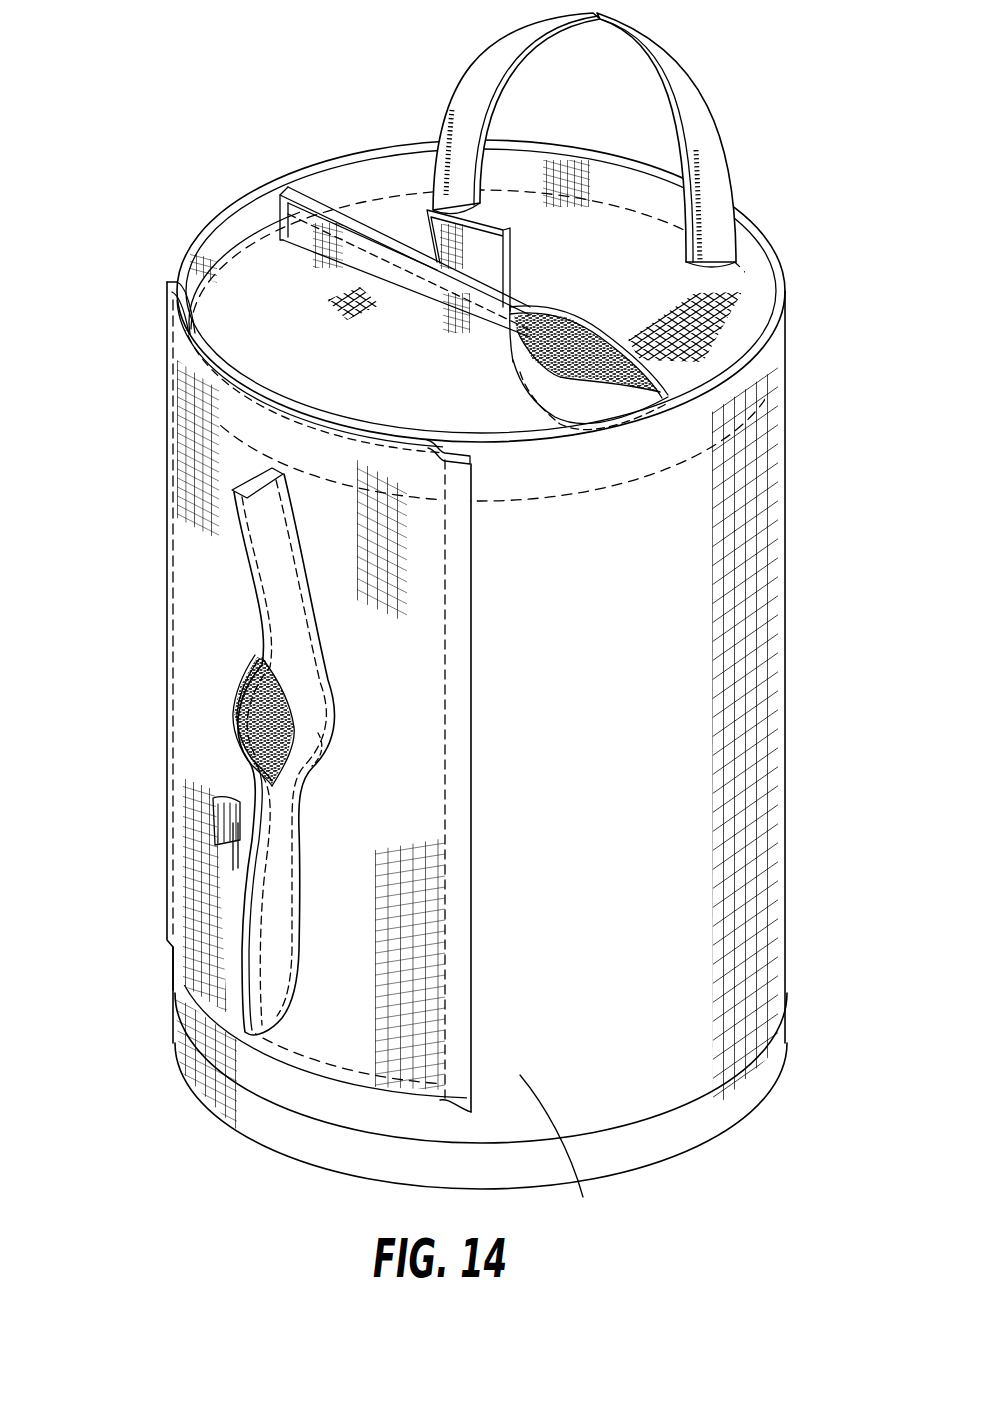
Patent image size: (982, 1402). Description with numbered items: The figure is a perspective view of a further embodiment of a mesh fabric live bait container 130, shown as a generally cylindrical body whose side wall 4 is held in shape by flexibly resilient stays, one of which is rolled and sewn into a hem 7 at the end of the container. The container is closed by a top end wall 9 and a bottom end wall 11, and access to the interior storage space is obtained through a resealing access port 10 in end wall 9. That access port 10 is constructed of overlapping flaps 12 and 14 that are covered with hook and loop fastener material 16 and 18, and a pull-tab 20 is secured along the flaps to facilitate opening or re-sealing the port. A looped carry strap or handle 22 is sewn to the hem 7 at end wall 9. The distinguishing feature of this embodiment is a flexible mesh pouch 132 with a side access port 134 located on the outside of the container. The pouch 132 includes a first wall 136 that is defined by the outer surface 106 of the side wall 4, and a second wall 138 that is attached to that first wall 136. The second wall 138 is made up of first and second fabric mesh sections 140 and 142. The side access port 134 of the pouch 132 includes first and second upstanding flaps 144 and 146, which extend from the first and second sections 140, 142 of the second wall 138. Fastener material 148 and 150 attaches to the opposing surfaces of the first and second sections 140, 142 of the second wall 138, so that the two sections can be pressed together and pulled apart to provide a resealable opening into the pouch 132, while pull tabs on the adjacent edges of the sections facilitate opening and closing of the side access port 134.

The side wall 4 is at (792, 664).
The hem 7 is at (754, 398).
The end wall 9 is at (728, 335).
The access port 10 is at (607, 335).
The end wall 11 is at (278, 1148).
The flap 12 is at (492, 332).
The flap 14 is at (605, 322).
The hook and loop fastener material 16 is at (563, 362).
The hook and loop fastener material 18 is at (578, 356).
The pull-tab 20 is at (480, 271).
The handle 22 is at (697, 125).
The outer surface 106 is at (627, 1148).
The live bait container 130 is at (203, 190).
The flexible mesh pouch 132 is at (191, 545).
The side access port 134 is at (244, 751).
The first wall 136 is at (421, 433).
The second wall 138 is at (415, 577).
The first fabric mesh section 140 is at (222, 667).
The second fabric mesh section 142 is at (380, 773).
The first upstanding flap 144 is at (258, 652).
The second upstanding flap 146 is at (305, 673).
The fastener material 148 is at (250, 757).
The fastener material 150 is at (322, 740).